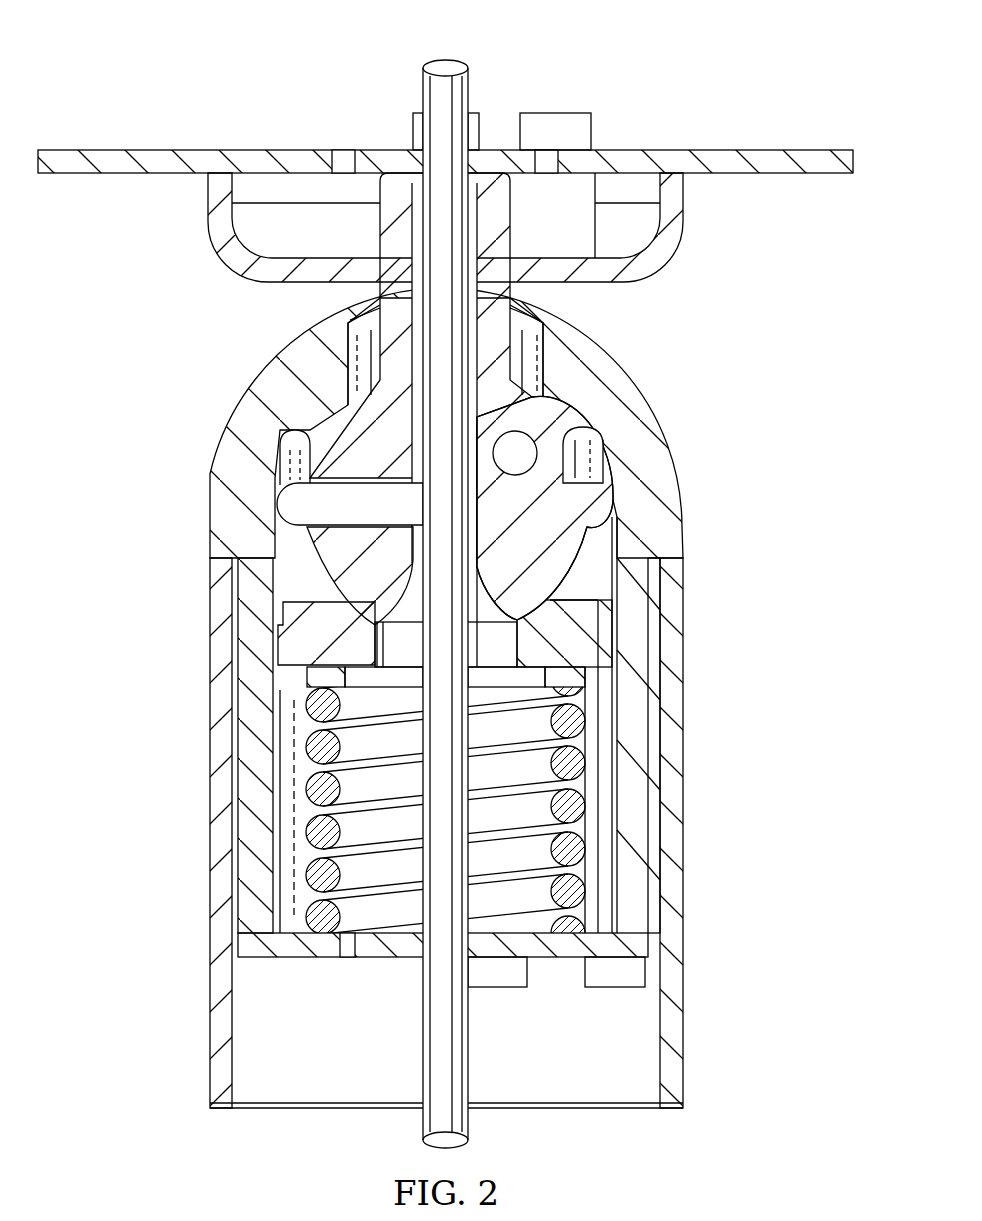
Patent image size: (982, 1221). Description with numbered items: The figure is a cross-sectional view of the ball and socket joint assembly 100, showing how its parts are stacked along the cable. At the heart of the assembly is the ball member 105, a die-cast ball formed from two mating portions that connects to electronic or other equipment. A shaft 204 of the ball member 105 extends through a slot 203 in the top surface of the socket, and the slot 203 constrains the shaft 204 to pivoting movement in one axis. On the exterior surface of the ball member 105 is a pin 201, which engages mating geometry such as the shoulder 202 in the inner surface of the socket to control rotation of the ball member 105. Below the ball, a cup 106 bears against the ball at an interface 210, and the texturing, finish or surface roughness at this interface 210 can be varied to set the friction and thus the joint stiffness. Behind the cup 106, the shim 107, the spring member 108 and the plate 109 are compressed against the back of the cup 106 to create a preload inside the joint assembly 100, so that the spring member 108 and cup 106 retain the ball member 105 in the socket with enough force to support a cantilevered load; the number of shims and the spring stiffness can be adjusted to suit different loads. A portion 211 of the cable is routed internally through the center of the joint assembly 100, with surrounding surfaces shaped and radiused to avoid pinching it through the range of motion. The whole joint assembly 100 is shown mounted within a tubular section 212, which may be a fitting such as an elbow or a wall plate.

The ball and socket joint assembly 100 is at (445, 593).
The ball member 105 is at (555, 568).
The cup 106 is at (315, 612).
The shim 107 is at (317, 670).
The spring member 108 is at (320, 858).
The plate 109 is at (277, 957).
The pin 201 is at (612, 502).
The shoulder 202 is at (603, 527).
The slot 203 is at (362, 362).
The shaft 204 is at (512, 232).
The interface 210 is at (540, 640).
The portion of the cable 211 is at (423, 1030).
The tubular section 212 is at (683, 855).